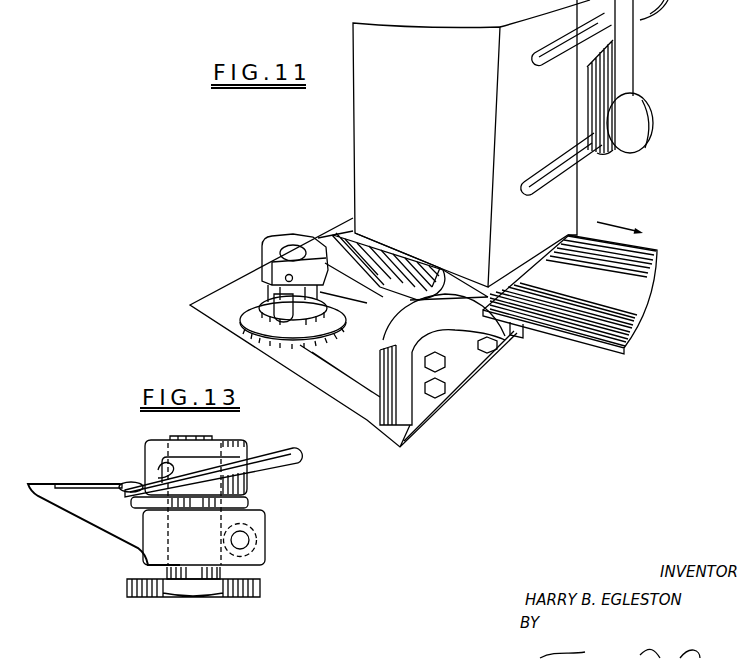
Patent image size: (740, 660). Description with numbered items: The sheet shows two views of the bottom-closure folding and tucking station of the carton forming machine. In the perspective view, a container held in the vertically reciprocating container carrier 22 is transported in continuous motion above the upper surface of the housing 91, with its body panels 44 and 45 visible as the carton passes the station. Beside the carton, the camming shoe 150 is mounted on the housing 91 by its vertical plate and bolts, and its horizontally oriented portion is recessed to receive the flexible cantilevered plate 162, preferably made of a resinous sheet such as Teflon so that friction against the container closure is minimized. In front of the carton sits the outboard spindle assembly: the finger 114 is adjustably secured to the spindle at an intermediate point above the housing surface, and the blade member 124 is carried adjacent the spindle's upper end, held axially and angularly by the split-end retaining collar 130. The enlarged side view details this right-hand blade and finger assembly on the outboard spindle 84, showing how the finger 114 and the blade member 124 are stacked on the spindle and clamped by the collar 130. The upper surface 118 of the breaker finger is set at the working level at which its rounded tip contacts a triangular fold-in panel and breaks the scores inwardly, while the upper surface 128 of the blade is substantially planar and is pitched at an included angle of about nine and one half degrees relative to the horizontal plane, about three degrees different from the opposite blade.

In FIG. 11, the container carrier 22 is at (636, 78).
In FIG. 11, the body panel 44 is at (446, 171).
In FIG. 11, the body panel 45 is at (562, 137).
In FIG. 13, the outboard spindle 84 is at (207, 437).
In FIG. 11, the housing 91 is at (246, 277).
In FIG. 13, the finger 114 is at (82, 520).
In FIG. 11, the upper surface of breaker finger 118 is at (300, 316).
In FIG. 13, the upper surface of breaker finger 118 is at (62, 475).
In FIG. 11, the blade member 124 is at (327, 225).
In FIG. 13, the blade member 124 is at (269, 478).
In FIG. 13, the upper surface of blade 128 is at (165, 475).
In FIG. 11, the retaining collar 130 is at (266, 244).
In FIG. 13, the retaining collar 130 is at (247, 490).
In FIG. 11, the camming shoe 150 is at (430, 411).
In FIG. 11, the flexible cantilevered plate 162 is at (603, 333).